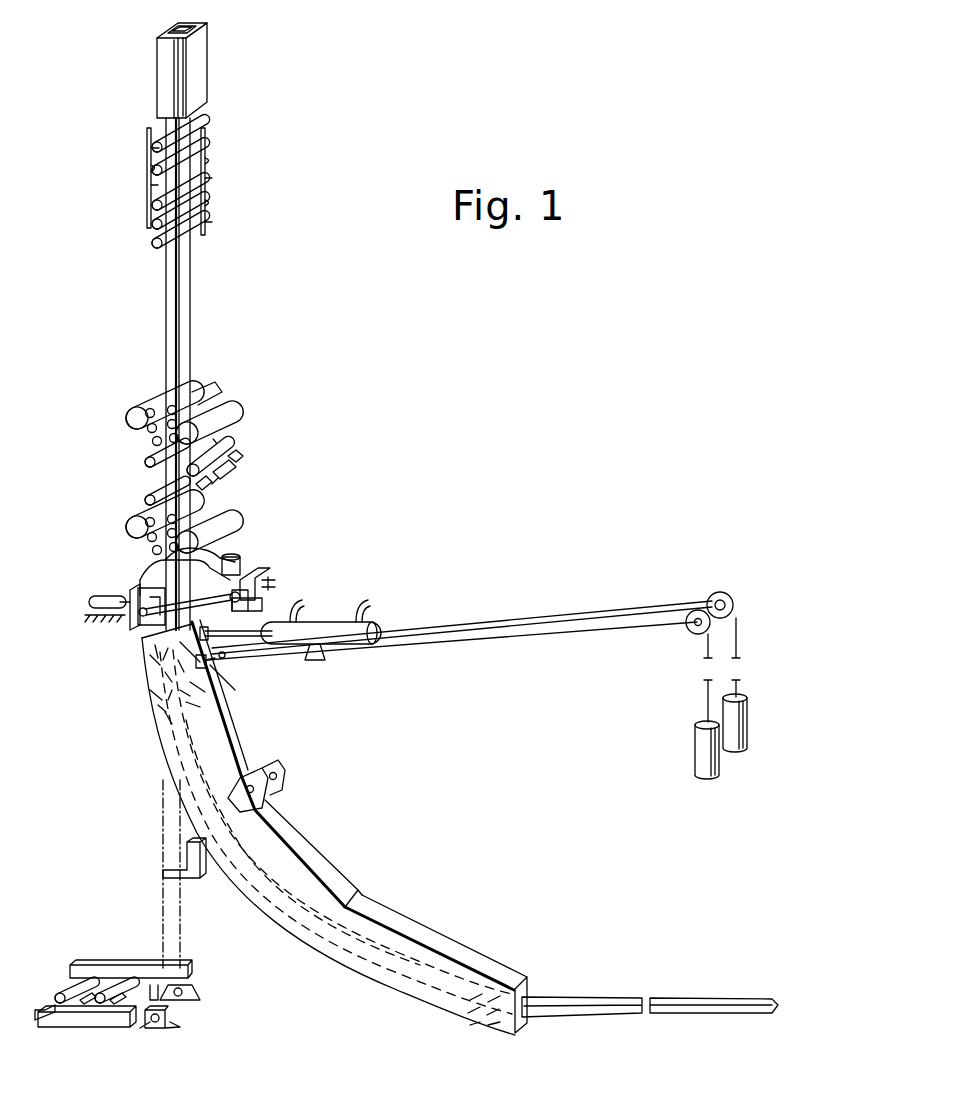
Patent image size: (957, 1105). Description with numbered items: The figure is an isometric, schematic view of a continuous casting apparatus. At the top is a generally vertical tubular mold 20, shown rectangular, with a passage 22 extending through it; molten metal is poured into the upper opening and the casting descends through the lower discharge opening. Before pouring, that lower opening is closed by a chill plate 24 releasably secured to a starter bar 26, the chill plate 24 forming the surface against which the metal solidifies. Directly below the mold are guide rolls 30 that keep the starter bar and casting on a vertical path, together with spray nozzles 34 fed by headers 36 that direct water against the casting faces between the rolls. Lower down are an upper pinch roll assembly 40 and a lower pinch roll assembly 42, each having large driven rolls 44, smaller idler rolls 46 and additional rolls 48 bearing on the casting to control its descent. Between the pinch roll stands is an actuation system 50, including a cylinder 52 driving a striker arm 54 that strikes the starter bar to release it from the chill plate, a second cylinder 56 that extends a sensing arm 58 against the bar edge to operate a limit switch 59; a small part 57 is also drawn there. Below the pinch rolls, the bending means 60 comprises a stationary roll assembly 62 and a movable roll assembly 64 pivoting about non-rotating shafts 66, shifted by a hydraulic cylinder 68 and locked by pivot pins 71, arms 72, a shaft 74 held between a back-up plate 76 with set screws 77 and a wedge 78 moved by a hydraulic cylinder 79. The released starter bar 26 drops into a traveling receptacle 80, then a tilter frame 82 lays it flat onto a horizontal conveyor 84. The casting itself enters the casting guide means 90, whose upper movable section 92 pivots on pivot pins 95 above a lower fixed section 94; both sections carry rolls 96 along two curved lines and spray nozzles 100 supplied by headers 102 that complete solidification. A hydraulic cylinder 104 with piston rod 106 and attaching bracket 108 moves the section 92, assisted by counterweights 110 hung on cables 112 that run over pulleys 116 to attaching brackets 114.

The tubular mold 20 is at (200, 60).
The passage 22 is at (178, 30).
The chill plate 24 is at (776, 1008).
The starter bar 26 is at (162, 812).
The guide rolls 30 is at (190, 130).
The spray nozzles 34 is at (150, 162).
The headers 36 is at (147, 136).
The upper pinch roll assembly 40 is at (167, 416).
The lower pinch roll assembly 42 is at (112, 510).
The driven rolls 44 is at (132, 415).
The idler rolls 46 is at (208, 392).
The additional rolls 48 is at (150, 441).
The actuation system 50 is at (214, 446).
The air cylinder 52 is at (215, 445).
The striker arm 54 is at (180, 476).
The air cylinder 56 is at (226, 472).
The pin 57 is at (222, 476).
The sensing arm 58 is at (205, 486).
The limit switch 59 is at (240, 456).
The bending means 60 is at (287, 567).
The stationary roll assembly 62 is at (153, 563).
The movable roll assembly 64 is at (135, 619).
The non-rotating shafts 66 is at (143, 586).
The hydraulic cylinder 68 is at (97, 593).
The pivot pins 71 is at (140, 618).
The arms 72 is at (190, 605).
The shaft 74 is at (255, 571).
The back-up plate 76 is at (262, 601).
The set screws 77 is at (278, 588).
The wedge 78 is at (209, 560).
The hydraulic cylinder 79 is at (231, 554).
The traveling receptacle 80 is at (162, 872).
The tilter frame 82 is at (134, 965).
The horizontal conveyor 84 is at (118, 1021).
The casting guide means 90 is at (316, 827).
The upper movable section 92 is at (238, 723).
The lower fixed section 94 is at (344, 876).
The pivot pins 95 is at (274, 768).
The rolls 96 is at (150, 703).
The spray nozzles 100 is at (150, 677).
The headers 102 is at (158, 730).
The hydraulic cylinder 104 is at (335, 622).
The piston rod 106 is at (310, 650).
The attaching bracket 108 is at (214, 630).
The counterweights 110 is at (736, 752).
The cables 112 is at (566, 593).
The attaching brackets 114 is at (232, 682).
The pulleys 116 is at (686, 629).